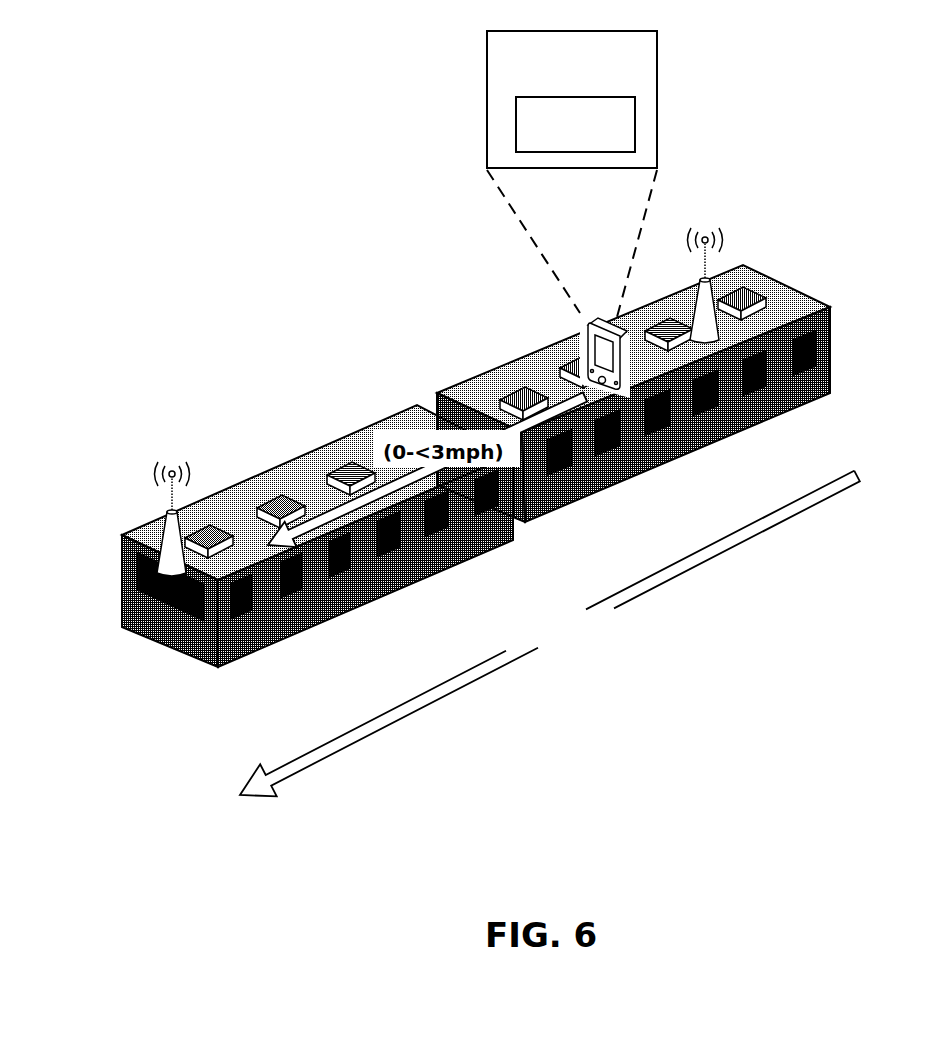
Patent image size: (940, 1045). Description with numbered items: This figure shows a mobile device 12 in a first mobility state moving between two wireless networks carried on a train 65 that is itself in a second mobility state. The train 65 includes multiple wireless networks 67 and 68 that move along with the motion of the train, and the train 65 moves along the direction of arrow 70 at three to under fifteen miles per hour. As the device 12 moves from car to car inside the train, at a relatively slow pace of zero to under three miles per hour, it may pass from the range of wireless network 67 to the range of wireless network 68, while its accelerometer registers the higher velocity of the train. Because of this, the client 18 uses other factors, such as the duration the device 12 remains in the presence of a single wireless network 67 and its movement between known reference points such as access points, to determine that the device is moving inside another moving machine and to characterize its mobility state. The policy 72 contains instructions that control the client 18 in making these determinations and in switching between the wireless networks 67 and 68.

The device 12 is at (580, 333).
The client 18 is at (488, 45).
The train 65 is at (343, 508).
The wireless network 67 is at (722, 268).
The wireless network 68 is at (158, 503).
The arrow 70 is at (860, 478).
The policy 72 is at (516, 126).